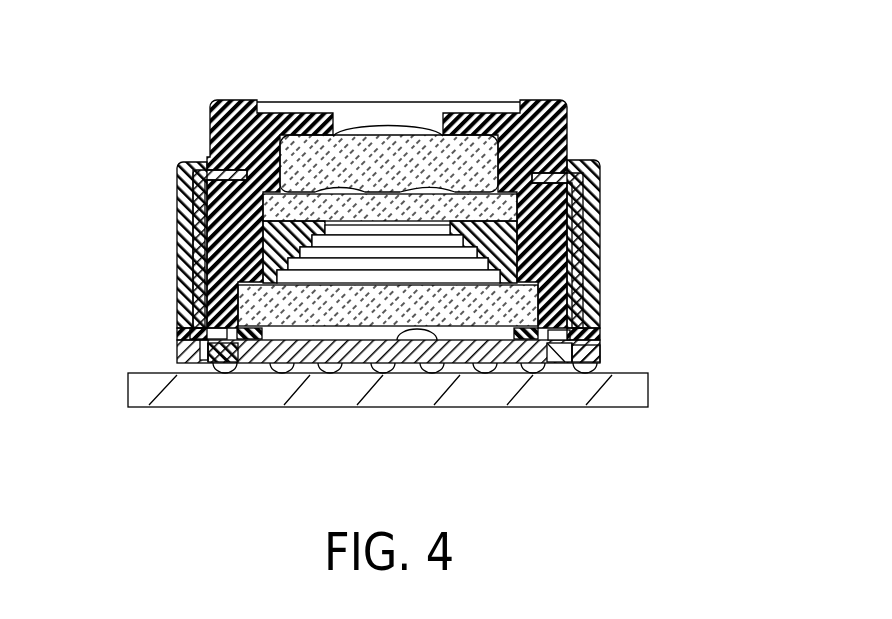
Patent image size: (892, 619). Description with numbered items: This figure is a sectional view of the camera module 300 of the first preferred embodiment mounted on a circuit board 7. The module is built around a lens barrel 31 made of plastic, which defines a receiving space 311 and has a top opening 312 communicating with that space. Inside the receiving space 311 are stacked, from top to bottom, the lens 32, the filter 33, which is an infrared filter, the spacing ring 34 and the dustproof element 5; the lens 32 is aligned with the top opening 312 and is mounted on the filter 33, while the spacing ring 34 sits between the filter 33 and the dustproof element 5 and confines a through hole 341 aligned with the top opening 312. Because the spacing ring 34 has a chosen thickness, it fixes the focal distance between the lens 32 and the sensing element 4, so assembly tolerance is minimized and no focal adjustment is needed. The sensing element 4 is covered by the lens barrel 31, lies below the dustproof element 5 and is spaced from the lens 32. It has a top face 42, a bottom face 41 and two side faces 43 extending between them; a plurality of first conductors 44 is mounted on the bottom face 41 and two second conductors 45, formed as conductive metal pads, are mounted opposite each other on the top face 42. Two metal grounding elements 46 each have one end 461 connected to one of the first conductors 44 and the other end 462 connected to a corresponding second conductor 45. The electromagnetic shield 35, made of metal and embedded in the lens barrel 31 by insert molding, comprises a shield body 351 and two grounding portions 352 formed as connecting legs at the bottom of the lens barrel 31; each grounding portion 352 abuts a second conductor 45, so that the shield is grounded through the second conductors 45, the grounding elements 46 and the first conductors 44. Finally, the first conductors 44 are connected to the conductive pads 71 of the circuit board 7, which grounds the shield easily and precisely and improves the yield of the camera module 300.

The camera module 300 is at (390, 245).
The top opening 312 is at (357, 110).
The lens barrel 31 is at (568, 121).
The lens 32 is at (567, 151).
The filter 33 is at (177, 199).
The spacing ring 34 is at (177, 231).
The through hole 341 is at (177, 254).
The shield body 351 is at (584, 190).
The electromagnetic shield 35 is at (600, 219).
The grounding portions 352 is at (177, 325).
The second conductors 45 is at (177, 333).
The grounding elements 46 is at (177, 340).
The other end of grounding element 462 is at (203, 360).
The side faces 43 is at (177, 352).
The circuit board 7 is at (147, 388).
The conductive pads 71 is at (212, 347).
The first conductors 44 is at (237, 368).
The receiving space 311 is at (333, 255).
The dustproof element 5 is at (372, 300).
The top face 42 is at (437, 345).
The sensing element 4 is at (463, 345).
The one end of grounding element 461 is at (232, 362).
The bottom face 41 is at (581, 372).